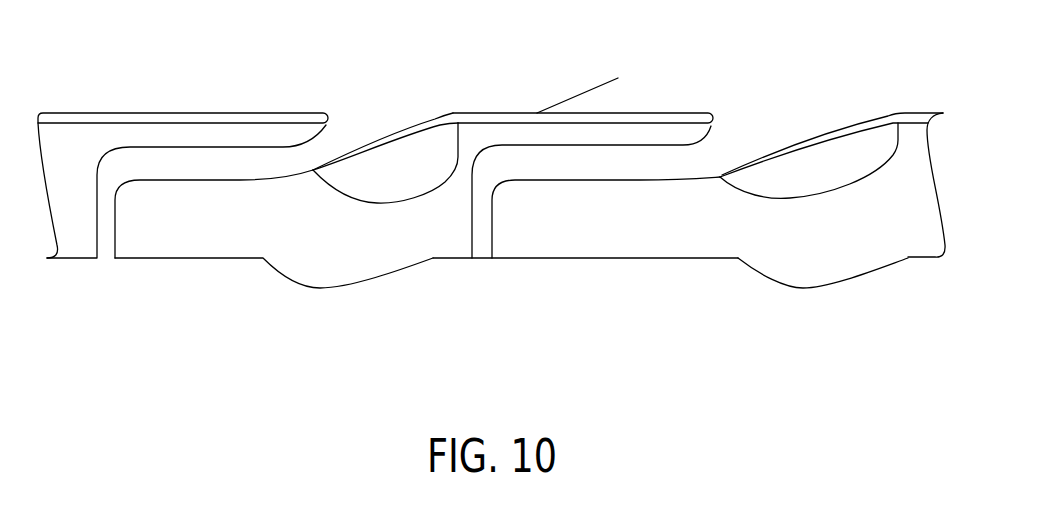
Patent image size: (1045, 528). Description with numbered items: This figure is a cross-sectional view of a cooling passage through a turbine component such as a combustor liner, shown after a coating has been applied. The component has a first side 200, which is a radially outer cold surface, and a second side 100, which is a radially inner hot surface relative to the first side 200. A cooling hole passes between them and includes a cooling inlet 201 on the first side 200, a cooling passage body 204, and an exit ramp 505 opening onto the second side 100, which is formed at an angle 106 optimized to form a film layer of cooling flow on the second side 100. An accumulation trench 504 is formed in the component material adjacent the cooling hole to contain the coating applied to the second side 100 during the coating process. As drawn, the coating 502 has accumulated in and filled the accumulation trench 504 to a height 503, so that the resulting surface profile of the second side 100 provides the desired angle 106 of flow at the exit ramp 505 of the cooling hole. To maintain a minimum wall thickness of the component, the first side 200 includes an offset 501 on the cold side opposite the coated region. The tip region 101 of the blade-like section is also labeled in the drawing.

The second side 100 is at (181, 86).
The contact blade tip 101 is at (707, 126).
The angle 106 is at (600, 112).
The first side 200 is at (851, 337).
The cooling inlet 201 is at (483, 257).
The cooling passage body 204 is at (572, 173).
The offset 501 is at (798, 288).
The coating 502 is at (462, 112).
The height 503 is at (390, 165).
The accumulation trench 504 is at (817, 193).
The exit ramp 505 is at (768, 153).